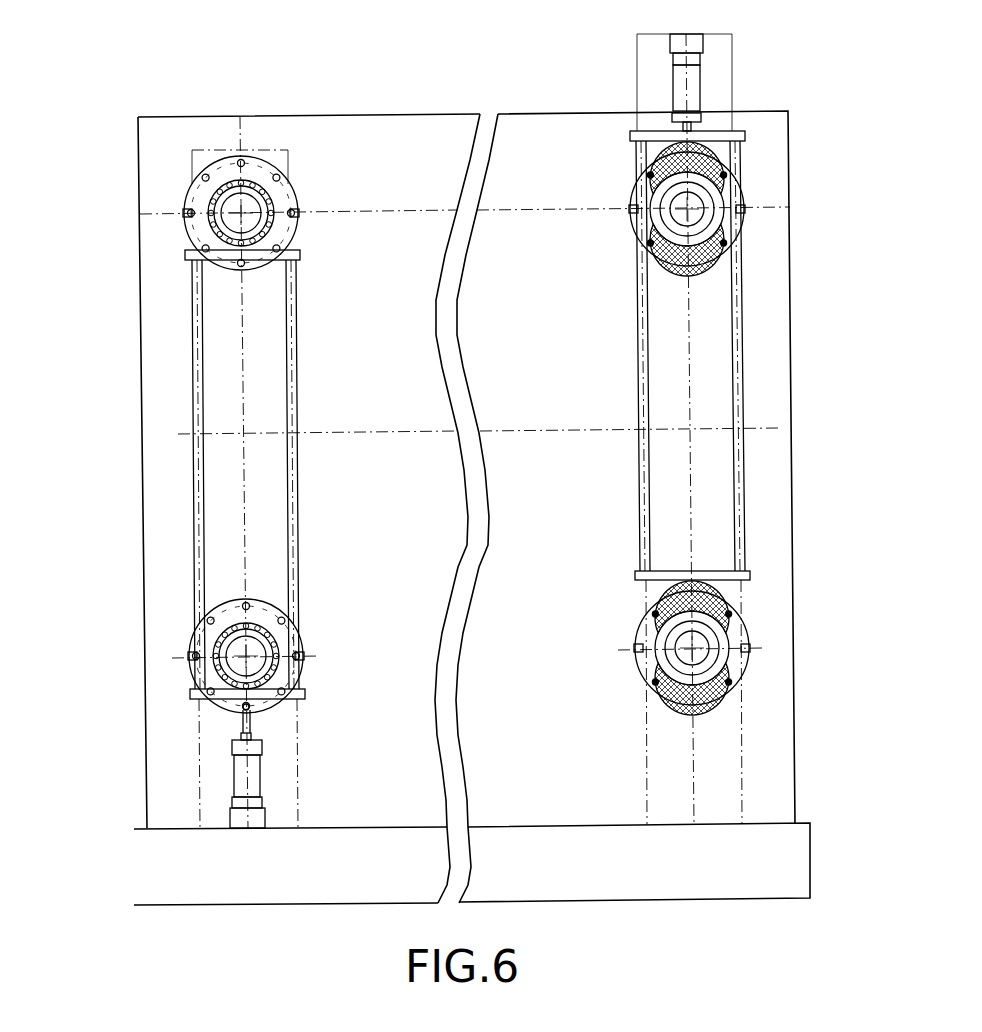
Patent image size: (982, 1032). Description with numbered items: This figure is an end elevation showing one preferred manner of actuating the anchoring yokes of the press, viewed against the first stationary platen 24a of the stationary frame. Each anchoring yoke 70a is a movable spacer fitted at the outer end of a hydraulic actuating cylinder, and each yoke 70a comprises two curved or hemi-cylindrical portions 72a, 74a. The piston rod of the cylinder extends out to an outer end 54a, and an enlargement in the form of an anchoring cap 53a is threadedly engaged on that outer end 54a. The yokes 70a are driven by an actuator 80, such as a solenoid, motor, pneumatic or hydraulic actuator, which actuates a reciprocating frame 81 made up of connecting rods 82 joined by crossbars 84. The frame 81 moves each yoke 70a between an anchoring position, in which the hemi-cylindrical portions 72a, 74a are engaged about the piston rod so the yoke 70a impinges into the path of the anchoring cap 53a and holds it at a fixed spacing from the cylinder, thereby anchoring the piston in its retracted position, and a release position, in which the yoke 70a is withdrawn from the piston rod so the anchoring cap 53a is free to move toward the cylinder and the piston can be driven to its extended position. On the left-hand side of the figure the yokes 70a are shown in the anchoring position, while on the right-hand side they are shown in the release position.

The first stationary platen 24a is at (168, 358).
The anchoring cap 53a is at (275, 195).
The outer end of piston rod 54a is at (252, 223).
The anchoring yoke 70a is at (217, 200).
The hemi-cylindrical portion of yoke 72a is at (255, 182).
The hemi-cylindrical portion of yoke 74a is at (253, 255).
The actuator 80 is at (262, 760).
The reciprocating frame 81 is at (160, 434).
The connecting rods 82 is at (290, 488).
The crossbars 84 is at (190, 253).